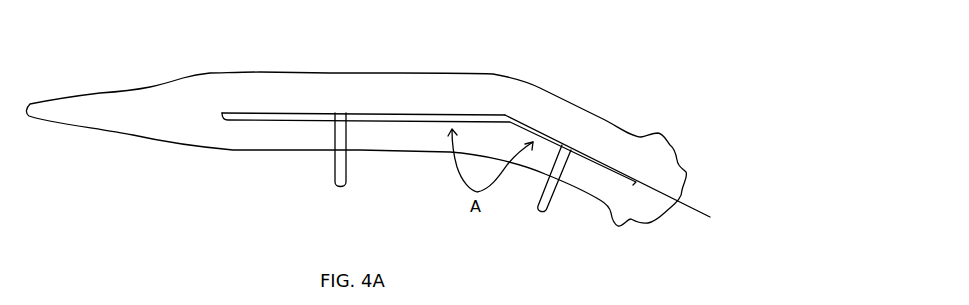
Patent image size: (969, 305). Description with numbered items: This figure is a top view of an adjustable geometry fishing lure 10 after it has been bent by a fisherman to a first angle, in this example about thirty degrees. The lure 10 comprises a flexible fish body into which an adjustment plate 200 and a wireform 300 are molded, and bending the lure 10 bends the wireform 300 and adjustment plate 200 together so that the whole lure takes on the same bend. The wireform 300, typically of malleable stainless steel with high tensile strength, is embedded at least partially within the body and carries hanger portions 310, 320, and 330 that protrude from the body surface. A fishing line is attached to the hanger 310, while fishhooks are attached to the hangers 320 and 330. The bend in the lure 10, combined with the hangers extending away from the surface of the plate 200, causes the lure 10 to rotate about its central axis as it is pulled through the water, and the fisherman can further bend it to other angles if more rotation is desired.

The adjustable geometry fishing lure 10 is at (633, 65).
The adjustment plate 200 is at (265, 118).
The wireform 300 is at (387, 110).
The hanger portion 310 is at (710, 217).
The hanger portion 320 is at (547, 210).
The hanger portion 330 is at (346, 186).